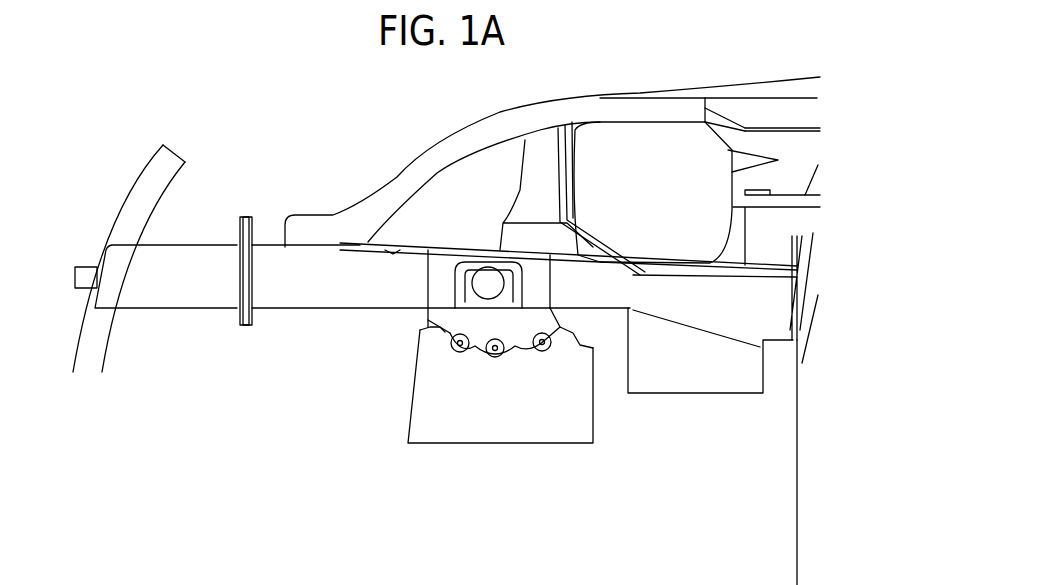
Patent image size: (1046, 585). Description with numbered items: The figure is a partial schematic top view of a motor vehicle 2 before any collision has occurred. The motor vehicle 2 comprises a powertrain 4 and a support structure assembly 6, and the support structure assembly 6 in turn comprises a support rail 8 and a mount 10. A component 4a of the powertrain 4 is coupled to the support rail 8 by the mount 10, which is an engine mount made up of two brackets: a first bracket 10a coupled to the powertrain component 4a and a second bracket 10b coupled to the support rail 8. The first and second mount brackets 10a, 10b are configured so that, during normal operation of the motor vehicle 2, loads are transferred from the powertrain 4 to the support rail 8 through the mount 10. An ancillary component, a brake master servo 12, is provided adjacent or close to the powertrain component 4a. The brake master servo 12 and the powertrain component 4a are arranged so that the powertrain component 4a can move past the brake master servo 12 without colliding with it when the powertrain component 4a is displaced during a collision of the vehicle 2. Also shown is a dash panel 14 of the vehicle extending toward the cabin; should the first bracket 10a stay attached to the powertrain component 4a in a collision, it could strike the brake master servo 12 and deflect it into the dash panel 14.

The motor vehicle 2 is at (190, 112).
The powertrain 4 is at (365, 432).
The powertrain component 4a is at (527, 422).
The support structure assembly 6 is at (605, 237).
The support rail 8 is at (271, 262).
The mount 10 is at (465, 235).
The first bracket 10a is at (443, 323).
The second bracket 10b is at (428, 290).
The brake master servo 12 is at (680, 378).
The dash panel 14 is at (797, 500).